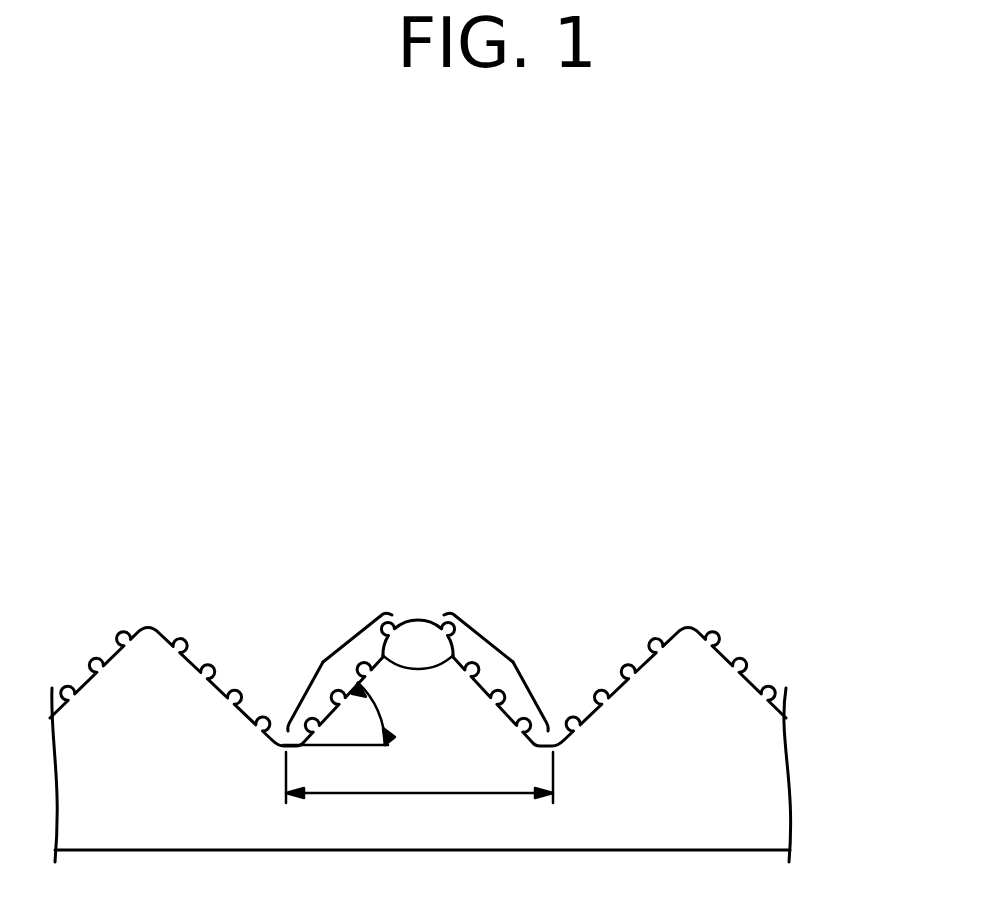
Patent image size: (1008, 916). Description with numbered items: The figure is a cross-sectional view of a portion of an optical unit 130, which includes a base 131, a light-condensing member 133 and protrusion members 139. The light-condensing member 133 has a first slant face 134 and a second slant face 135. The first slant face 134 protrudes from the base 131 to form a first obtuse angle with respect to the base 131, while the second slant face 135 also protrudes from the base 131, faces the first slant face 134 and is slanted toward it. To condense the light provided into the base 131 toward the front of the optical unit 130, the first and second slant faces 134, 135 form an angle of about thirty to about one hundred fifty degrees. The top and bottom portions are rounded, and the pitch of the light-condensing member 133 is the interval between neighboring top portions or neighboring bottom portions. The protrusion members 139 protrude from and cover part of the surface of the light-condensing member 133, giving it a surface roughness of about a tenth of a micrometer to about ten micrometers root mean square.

The optical unit 130 is at (483, 359).
The base 131 is at (765, 777).
The light-condensing member 133 is at (285, 536).
The first slant face 134 is at (323, 662).
The second slant face 135 is at (513, 662).
The protrusion members 139 is at (400, 634).